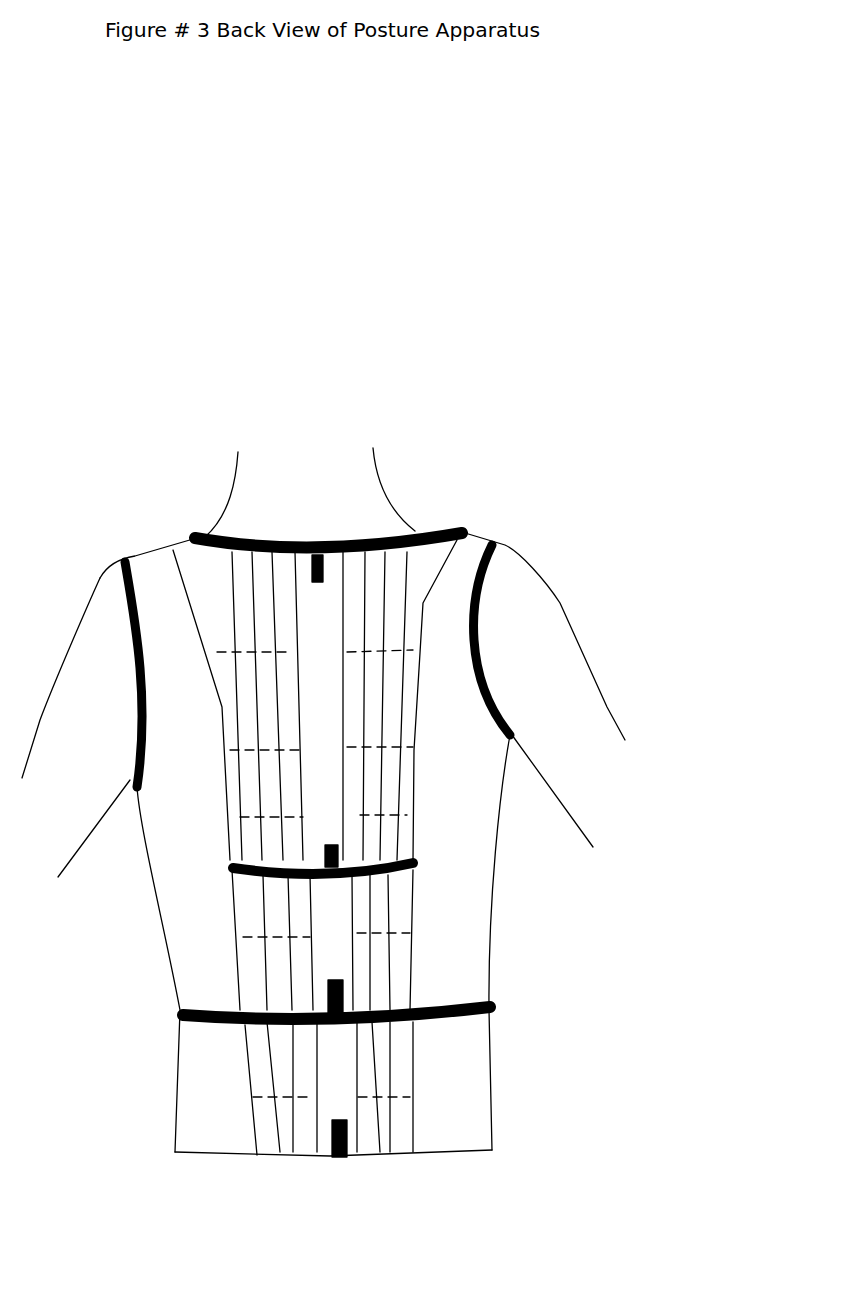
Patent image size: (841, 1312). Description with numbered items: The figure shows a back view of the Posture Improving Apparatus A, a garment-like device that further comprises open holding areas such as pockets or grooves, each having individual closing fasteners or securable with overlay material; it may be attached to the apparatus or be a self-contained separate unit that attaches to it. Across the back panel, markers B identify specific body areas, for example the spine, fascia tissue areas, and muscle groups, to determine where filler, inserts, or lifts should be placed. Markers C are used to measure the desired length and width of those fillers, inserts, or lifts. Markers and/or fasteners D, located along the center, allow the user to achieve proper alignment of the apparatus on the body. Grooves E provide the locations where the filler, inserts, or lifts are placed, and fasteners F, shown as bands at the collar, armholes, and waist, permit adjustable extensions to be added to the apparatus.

The posture apparatus garment A is at (430, 727).
The markers for specific areas B is at (397, 663).
The markers to measure desired length and width C is at (348, 627).
The markers and/or fasteners for proper alignment D is at (320, 523).
The grooves E is at (397, 788).
The fasteners for adding adjustable extensions F is at (197, 527).